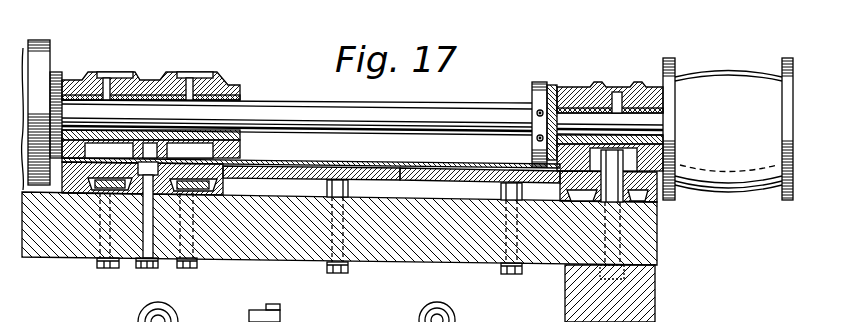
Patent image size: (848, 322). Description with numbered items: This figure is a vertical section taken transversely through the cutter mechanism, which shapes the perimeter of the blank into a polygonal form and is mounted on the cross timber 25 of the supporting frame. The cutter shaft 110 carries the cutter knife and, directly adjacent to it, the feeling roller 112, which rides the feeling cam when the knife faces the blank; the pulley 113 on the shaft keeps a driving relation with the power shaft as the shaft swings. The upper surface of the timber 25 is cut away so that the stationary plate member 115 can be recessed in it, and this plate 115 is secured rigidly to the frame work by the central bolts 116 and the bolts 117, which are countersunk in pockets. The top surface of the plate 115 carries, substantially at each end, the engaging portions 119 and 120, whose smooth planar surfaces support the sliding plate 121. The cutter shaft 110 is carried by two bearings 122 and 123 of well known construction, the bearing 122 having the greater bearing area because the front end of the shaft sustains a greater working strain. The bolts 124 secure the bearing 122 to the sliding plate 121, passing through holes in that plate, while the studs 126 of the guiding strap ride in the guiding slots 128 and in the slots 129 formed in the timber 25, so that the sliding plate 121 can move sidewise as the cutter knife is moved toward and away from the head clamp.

The cross timber 25 is at (633, 246).
The cutter shaft 110 is at (398, 113).
The feeling roller 112 is at (43, 77).
The pulley 113 is at (736, 117).
The stationary plate member 115 is at (450, 158).
The central bolts 116 is at (502, 273).
The bolts 117 is at (148, 268).
The engaging portion 119 is at (280, 156).
The engaging portion 120 is at (533, 168).
The sliding plate 121 is at (335, 156).
The bearing 122 is at (236, 85).
The bearing 123 is at (633, 75).
The bolts 124 is at (181, 312).
The studs 126 is at (110, 268).
The guiding slots 128 is at (187, 268).
The slots 129 is at (100, 245).